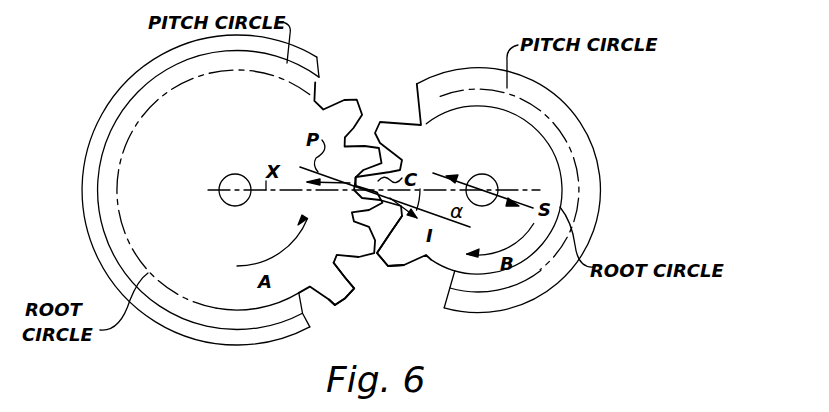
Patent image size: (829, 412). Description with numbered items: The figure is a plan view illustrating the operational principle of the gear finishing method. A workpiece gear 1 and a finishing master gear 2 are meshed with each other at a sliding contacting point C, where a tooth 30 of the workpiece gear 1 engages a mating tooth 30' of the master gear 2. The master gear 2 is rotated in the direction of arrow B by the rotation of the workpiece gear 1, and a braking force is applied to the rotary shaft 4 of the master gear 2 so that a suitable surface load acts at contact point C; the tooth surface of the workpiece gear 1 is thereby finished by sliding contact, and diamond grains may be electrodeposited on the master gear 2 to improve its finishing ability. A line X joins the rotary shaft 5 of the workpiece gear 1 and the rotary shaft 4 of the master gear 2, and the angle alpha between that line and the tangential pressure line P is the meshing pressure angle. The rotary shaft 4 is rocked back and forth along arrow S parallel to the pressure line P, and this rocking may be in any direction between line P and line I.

The workpiece gear 1 is at (90, 157).
The finishing master gear 2 is at (585, 158).
The rotary shaft 4 is at (493, 183).
The rotary shaft 5 is at (233, 174).
The tooth of first gear 30 is at (343, 301).
The tooth of second gear 30' is at (399, 278).